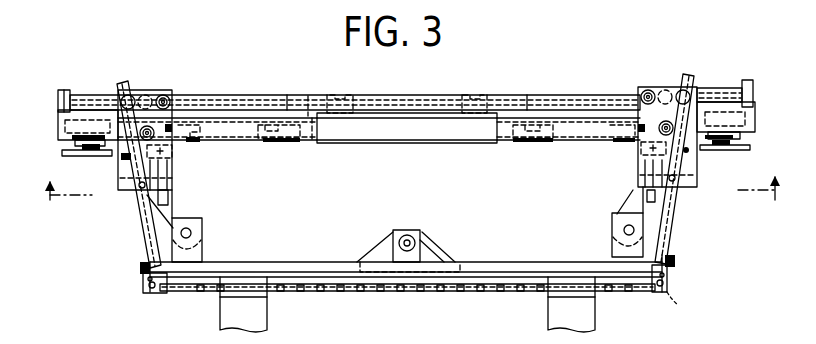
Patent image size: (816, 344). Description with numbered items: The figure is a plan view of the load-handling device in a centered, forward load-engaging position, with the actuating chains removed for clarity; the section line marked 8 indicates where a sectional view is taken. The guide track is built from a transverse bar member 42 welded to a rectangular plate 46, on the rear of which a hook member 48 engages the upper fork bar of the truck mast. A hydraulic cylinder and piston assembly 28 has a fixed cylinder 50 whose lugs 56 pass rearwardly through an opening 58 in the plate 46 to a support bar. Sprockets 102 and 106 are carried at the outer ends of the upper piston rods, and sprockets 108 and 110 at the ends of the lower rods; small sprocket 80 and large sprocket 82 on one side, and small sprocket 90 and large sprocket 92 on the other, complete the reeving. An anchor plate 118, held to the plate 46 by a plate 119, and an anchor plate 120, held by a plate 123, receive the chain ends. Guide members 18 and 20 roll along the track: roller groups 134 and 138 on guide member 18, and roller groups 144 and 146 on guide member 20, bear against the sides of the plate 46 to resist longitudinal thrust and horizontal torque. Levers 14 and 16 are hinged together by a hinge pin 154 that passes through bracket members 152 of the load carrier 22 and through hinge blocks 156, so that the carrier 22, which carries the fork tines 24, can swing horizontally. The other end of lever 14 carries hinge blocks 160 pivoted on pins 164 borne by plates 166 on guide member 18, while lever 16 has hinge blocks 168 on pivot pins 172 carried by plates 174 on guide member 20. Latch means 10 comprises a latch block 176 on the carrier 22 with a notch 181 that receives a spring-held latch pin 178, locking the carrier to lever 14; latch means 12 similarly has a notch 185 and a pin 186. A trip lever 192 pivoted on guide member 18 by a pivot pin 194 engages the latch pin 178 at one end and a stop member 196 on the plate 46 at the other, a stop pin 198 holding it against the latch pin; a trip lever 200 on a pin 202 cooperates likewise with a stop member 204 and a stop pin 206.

The latch means 10 is at (685, 268).
The latch means 12 is at (138, 277).
The lever (hinge plate) 14 is at (515, 262).
The lever (hinge plate) 16 is at (288, 262).
The guide member 18 is at (633, 160).
The guide member 20 is at (180, 165).
The load carrier (carriage plate) 22 is at (350, 292).
The fork tines 24 is at (260, 312).
The hydraulic cylinder and piston assembly 28 is at (380, 147).
The bar member 42 is at (310, 143).
The rectangular plate 46 is at (216, 115).
The hook member 48 is at (80, 96).
The fixed cylinder 50 is at (453, 140).
The lugs 56 is at (337, 93).
The opening 58 is at (308, 98).
The small sprocket 80 is at (713, 93).
The large sprocket 82 is at (750, 147).
The small sprocket 90 is at (122, 100).
The large sprocket 92 is at (63, 153).
The sprocket (piston rod wheel) 102 is at (557, 139).
The sprocket (piston rod wheel) 106 is at (190, 141).
The sprocket (piston rod wheel) 108 is at (623, 139).
The sprocket (piston rod wheel) 110 is at (262, 142).
The anchor plate 118 is at (748, 110).
The plate 119 is at (748, 131).
The anchor plate 120 is at (60, 120).
The plate 123 is at (60, 139).
The upper group of rollers 134 is at (645, 87).
The lower group of rollers 138 is at (677, 87).
The roller group 144 is at (164, 94).
The roller group 146 is at (145, 94).
The bracket members 152 is at (430, 250).
The hinge pin 154 is at (408, 235).
The hinge blocks 156 is at (393, 232).
The hinge blocks 160 is at (620, 247).
The pins 164 is at (625, 230).
The plates 166 is at (630, 197).
The hinge blocks 168 is at (200, 253).
The pivot pins 172 is at (192, 233).
The plates 174 is at (183, 208).
The latch block 176 is at (675, 277).
The latch pin 178 is at (664, 288).
The notch 181 is at (680, 300).
The notch 185 is at (143, 290).
The latch pin 186 is at (152, 292).
The trip lever 192 is at (668, 222).
The pivot pin 194 is at (672, 195).
The stop member 196 is at (752, 80).
The stop pin 198 is at (689, 152).
The trip lever 200 is at (147, 228).
The pin 202 is at (133, 200).
The stop member 204 is at (58, 90).
The stop pin 206 is at (126, 158).
The section line 8- 8 is at (410, 190).